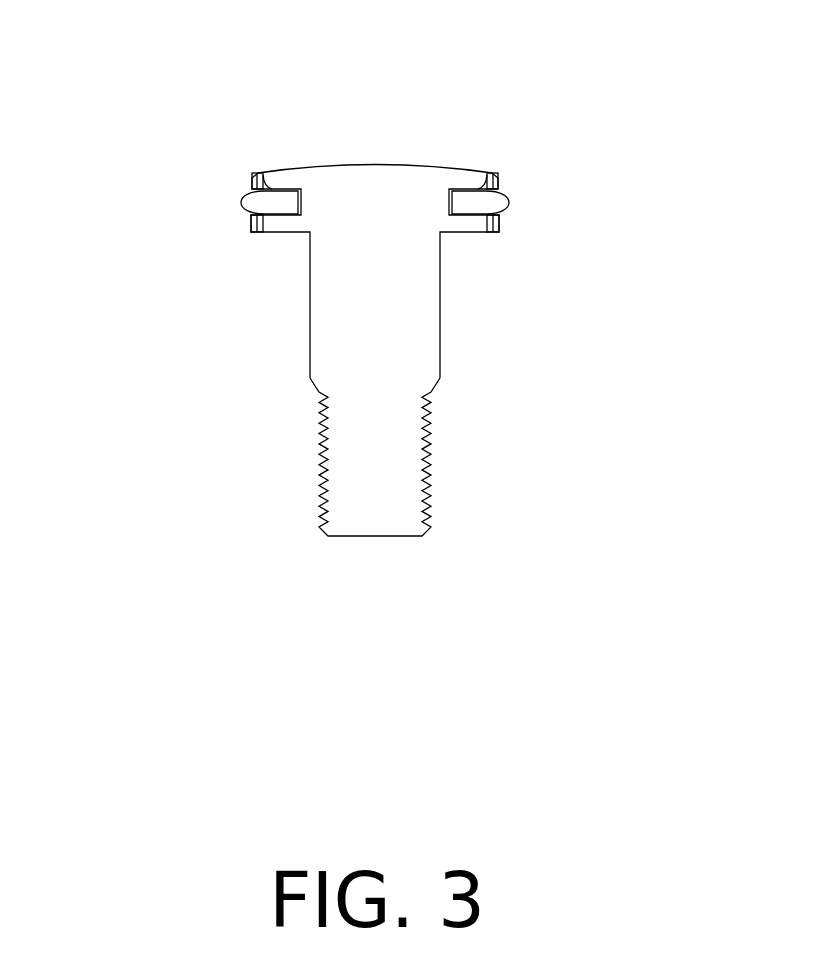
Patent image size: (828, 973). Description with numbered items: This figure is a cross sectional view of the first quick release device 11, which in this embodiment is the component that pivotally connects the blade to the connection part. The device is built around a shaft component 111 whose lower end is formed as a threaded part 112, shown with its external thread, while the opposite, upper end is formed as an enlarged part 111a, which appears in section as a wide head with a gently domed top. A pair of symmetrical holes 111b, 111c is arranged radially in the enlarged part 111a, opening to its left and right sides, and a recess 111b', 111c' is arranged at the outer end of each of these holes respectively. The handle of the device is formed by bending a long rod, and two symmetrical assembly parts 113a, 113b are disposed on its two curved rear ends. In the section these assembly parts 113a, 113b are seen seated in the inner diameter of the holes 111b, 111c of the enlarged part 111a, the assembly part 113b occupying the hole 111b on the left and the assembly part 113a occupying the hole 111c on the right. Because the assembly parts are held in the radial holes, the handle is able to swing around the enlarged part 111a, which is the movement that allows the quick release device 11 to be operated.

The first quick release device 11 is at (368, 274).
The shaft component 111 is at (428, 288).
The enlarged part 111a is at (387, 168).
The hole 111b is at (191, 266).
The recess 111b' is at (214, 137).
The hole 111c is at (563, 266).
The recess 111c' is at (549, 137).
The threaded part 112 is at (327, 464).
The assembly part 113a is at (500, 206).
The assembly part 113b is at (241, 197).